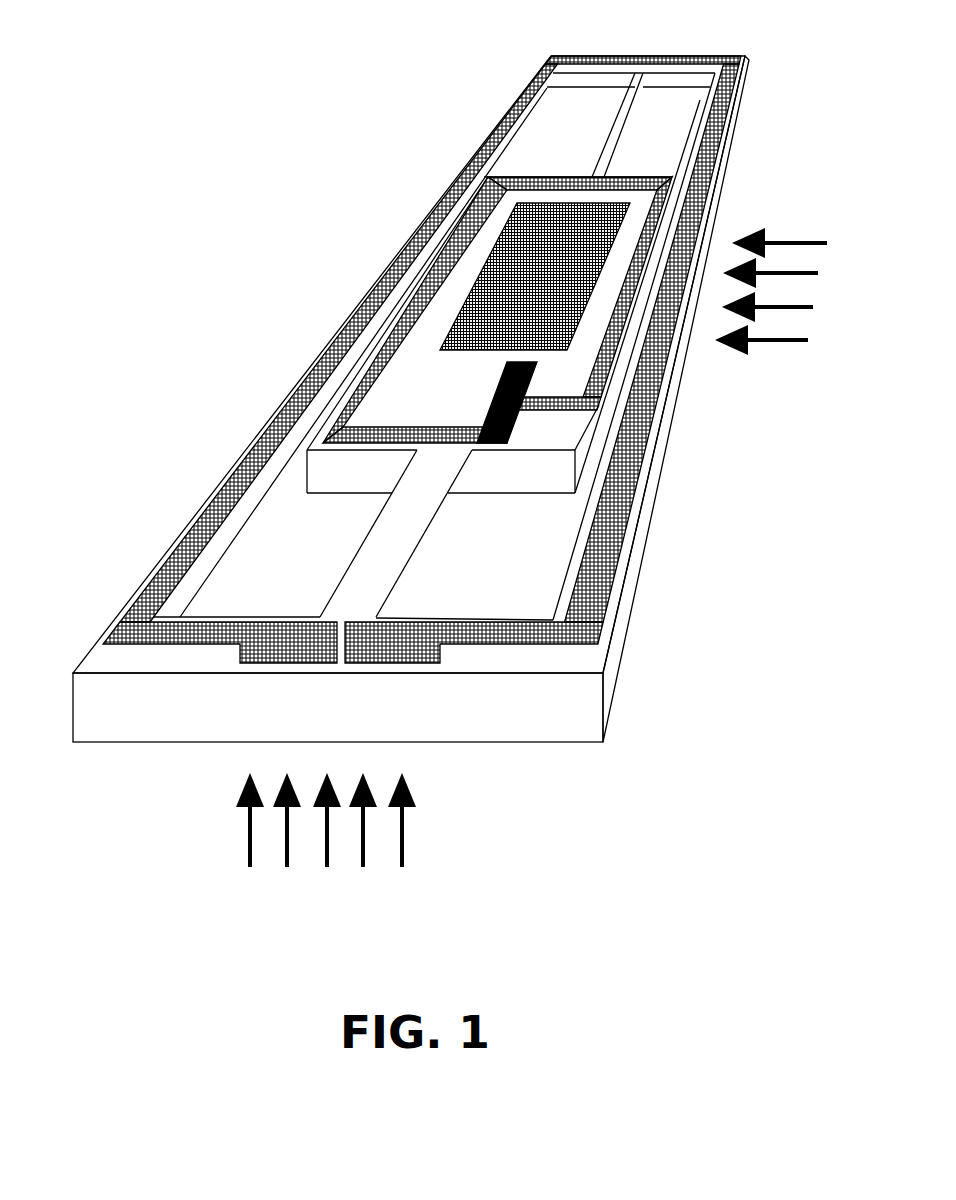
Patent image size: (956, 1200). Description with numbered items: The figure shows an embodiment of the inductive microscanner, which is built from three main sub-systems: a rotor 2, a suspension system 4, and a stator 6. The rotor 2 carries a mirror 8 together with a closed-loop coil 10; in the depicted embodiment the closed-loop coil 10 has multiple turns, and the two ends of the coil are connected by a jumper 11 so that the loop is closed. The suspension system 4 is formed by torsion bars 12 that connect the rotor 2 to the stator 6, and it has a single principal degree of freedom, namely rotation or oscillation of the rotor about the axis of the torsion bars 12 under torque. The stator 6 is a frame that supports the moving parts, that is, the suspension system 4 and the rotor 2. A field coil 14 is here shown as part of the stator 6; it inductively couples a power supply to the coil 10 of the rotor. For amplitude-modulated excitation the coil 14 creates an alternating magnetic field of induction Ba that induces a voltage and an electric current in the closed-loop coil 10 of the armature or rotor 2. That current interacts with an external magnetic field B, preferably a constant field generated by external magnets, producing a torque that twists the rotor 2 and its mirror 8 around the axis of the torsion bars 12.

The rotor 2 is at (660, 245).
The suspension system 4 is at (348, 548).
The stator 6 is at (588, 55).
The mirror 8 is at (505, 268).
The closed-loop coil 10 is at (340, 427).
The jumper 11 is at (503, 420).
The torsion bars 12 is at (604, 147).
The coil 14 is at (213, 510).
The external magnetic field B is at (782, 291).
The magnetic field of induction Ba is at (355, 820).